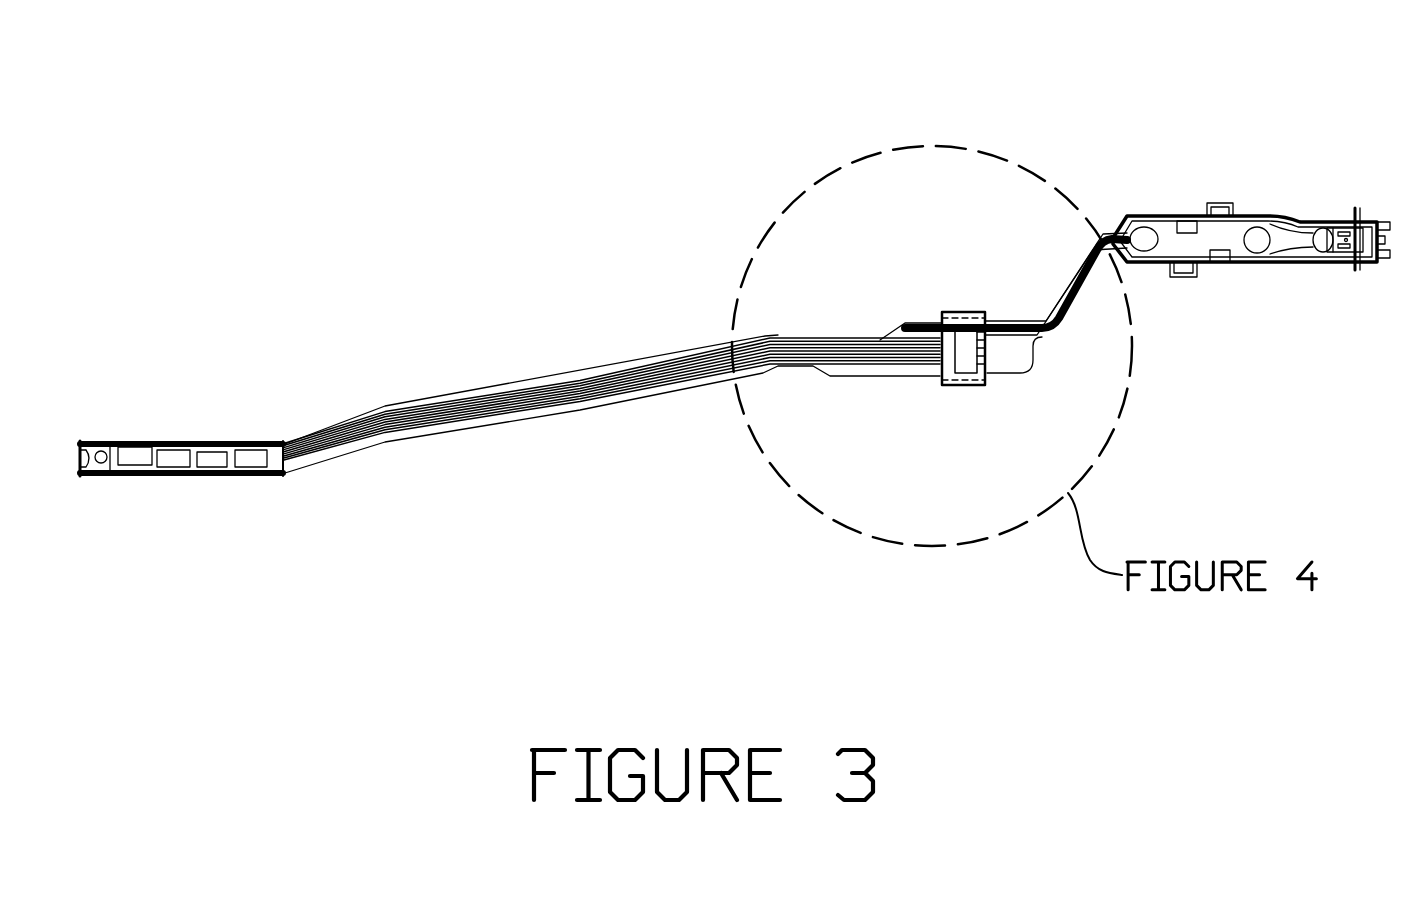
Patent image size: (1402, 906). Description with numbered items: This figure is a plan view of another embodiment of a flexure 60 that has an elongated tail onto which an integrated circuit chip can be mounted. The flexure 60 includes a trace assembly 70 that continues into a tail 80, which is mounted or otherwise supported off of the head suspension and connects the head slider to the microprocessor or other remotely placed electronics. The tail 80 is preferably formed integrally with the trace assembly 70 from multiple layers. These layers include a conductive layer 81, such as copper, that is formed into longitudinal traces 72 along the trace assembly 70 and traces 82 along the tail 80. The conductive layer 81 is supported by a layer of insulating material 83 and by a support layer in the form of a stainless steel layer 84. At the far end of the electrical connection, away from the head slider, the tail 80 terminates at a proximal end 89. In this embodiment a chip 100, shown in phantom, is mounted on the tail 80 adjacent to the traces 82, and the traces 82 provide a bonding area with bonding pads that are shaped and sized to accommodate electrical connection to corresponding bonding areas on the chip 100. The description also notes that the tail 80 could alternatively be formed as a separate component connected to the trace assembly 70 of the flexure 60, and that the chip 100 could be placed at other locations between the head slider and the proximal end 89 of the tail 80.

The flexure 60 is at (1251, 249).
The trace assembly 70 is at (1277, 265).
The longitudinal traces 72 is at (1227, 263).
The tail 80 is at (705, 366).
The conductive layer 81 is at (1033, 323).
The traces 82 is at (667, 364).
The layer of insulating material 83 is at (490, 416).
The stainless steel layer 84 is at (445, 400).
The proximal end 89 is at (148, 477).
The chip 100 is at (950, 387).